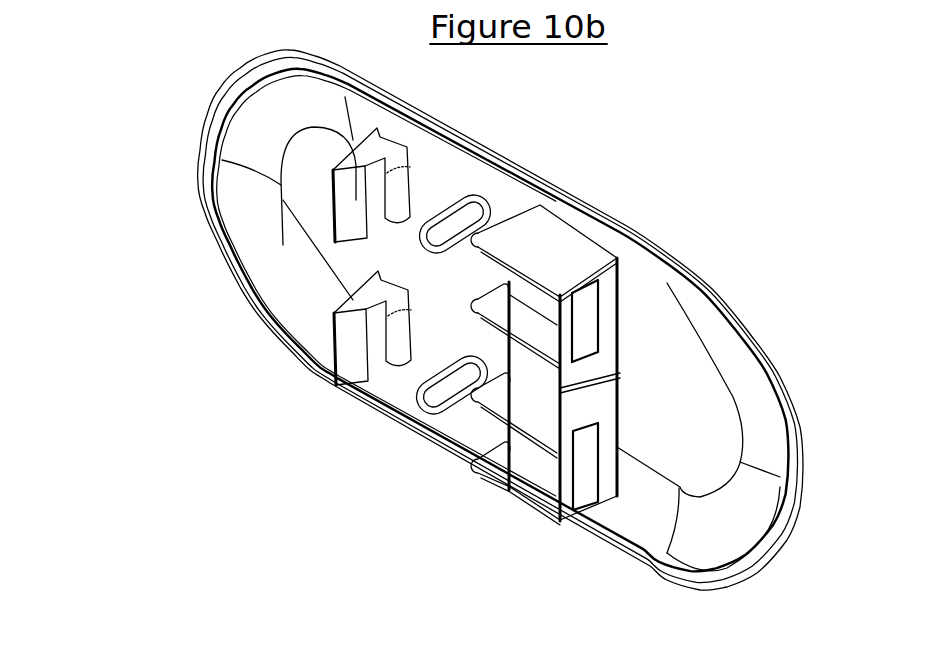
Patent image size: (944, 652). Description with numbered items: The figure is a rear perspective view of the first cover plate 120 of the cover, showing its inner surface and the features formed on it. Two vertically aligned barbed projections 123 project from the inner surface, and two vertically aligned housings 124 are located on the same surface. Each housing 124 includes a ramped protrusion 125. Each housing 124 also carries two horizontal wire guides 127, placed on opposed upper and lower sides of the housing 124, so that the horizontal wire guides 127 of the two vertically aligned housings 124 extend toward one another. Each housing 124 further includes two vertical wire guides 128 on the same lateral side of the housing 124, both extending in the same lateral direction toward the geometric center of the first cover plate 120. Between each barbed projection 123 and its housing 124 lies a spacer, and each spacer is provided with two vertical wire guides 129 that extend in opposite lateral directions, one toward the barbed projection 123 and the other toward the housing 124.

The first cover plate 120 is at (678, 131).
The barbed projection 123 is at (356, 212).
The housing 124 is at (560, 250).
The ramped protrusion 125 is at (583, 327).
The horizontal wire guide 127 is at (572, 375).
The vertical wire guide 128 is at (483, 300).
The vertical wire guide 129 is at (450, 243).